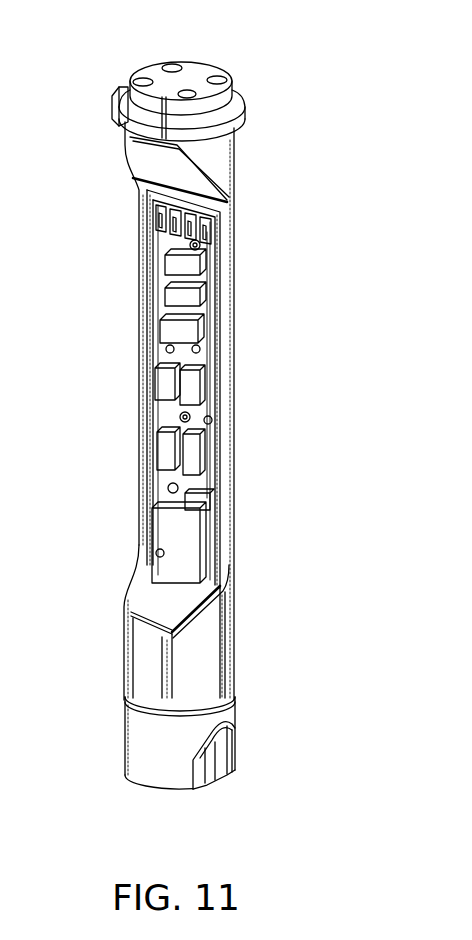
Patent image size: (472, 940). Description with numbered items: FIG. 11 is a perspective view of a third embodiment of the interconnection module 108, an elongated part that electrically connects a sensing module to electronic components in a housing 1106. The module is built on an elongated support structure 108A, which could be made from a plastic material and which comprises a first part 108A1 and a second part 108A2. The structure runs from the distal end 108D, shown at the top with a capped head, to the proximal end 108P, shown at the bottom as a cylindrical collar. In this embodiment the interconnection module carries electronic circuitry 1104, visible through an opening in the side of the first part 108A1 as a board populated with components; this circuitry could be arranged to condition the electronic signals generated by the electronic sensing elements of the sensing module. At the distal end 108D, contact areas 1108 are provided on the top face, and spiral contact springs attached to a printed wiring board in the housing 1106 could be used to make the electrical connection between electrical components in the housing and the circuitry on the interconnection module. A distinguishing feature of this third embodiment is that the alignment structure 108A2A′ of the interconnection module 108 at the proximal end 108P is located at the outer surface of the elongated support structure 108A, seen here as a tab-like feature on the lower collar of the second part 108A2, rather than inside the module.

The interconnection module 108 is at (266, 382).
The contact areas 1108 is at (224, 78).
The distal end 108D is at (108, 82).
The elongated support structure 108A is at (215, 158).
The electronic circuitry 1104 is at (163, 378).
The housing 1106 is at (163, 597).
The first part 108A1 is at (213, 655).
The second part 108A2 is at (150, 727).
The proximal end 108P is at (120, 749).
The alignment structure 108A2A′ is at (244, 740).